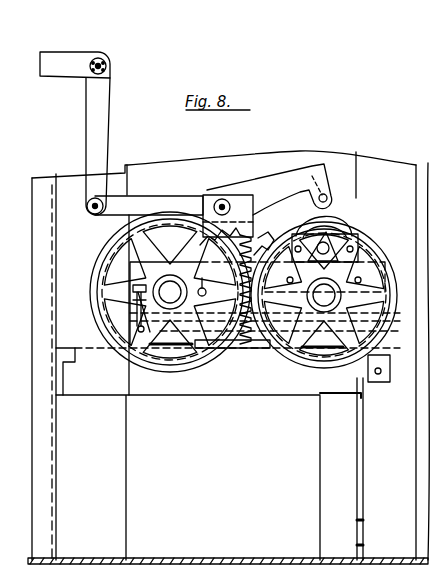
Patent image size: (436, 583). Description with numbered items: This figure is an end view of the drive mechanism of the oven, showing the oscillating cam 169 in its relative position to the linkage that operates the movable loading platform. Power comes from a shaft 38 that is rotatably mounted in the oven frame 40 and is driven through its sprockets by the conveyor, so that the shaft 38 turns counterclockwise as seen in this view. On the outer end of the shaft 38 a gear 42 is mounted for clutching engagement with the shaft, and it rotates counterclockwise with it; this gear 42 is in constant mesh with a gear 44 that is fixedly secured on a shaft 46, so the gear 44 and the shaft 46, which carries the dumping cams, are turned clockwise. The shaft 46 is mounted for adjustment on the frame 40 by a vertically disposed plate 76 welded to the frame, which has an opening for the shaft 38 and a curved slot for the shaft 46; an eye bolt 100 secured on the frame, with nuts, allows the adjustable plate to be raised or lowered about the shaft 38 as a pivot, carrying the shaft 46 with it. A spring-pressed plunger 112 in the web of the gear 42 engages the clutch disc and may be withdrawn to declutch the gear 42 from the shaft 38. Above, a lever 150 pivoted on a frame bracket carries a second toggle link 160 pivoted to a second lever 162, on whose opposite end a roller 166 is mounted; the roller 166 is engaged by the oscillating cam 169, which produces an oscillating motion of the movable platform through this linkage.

The shaft 38 is at (392, 382).
The oven frame 40 is at (197, 396).
The gear 42 is at (290, 355).
The gear 44 is at (103, 316).
The shaft 46 is at (170, 292).
The vertically disposed plate 76 is at (132, 258).
The eye bolt 100 is at (137, 313).
The spring-pressed plunger 112 is at (328, 244).
The lever 150 is at (72, 56).
The second toggle link 160 is at (104, 101).
The second lever 162 is at (133, 197).
The roller 166 is at (340, 196).
The oscillating cam 169 is at (334, 222).